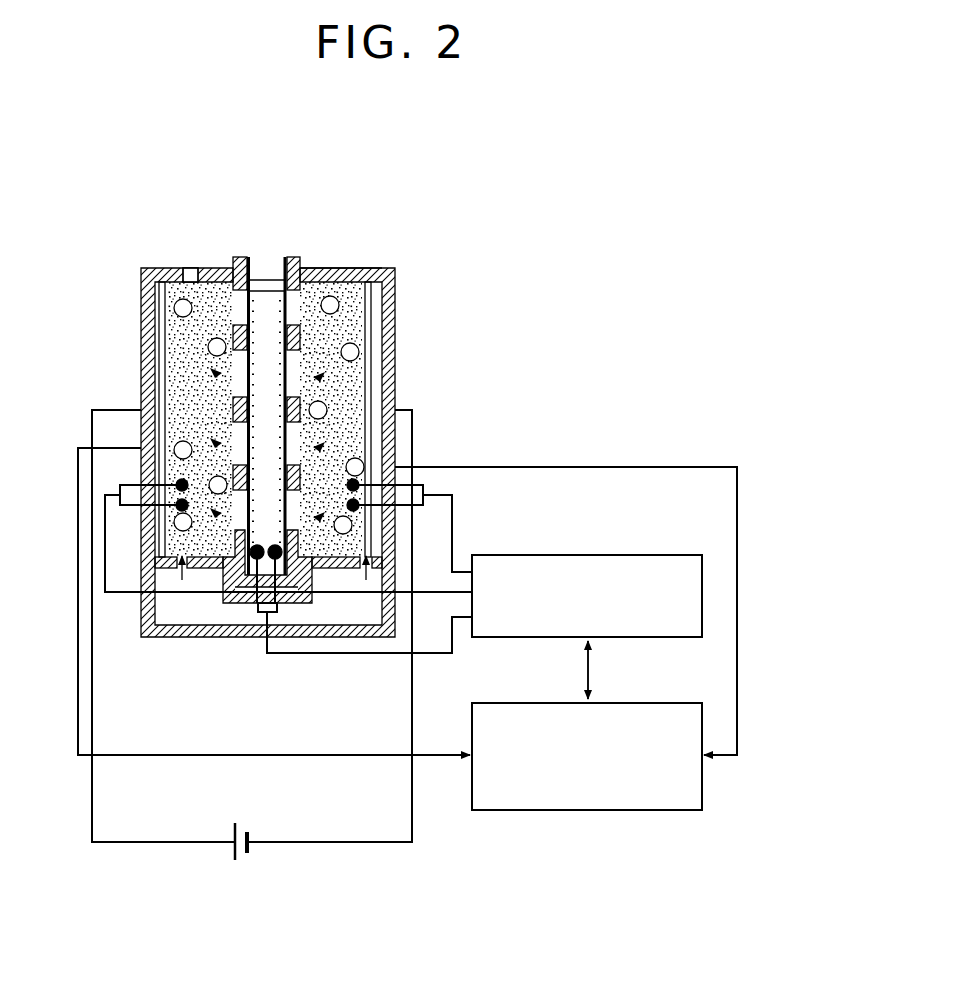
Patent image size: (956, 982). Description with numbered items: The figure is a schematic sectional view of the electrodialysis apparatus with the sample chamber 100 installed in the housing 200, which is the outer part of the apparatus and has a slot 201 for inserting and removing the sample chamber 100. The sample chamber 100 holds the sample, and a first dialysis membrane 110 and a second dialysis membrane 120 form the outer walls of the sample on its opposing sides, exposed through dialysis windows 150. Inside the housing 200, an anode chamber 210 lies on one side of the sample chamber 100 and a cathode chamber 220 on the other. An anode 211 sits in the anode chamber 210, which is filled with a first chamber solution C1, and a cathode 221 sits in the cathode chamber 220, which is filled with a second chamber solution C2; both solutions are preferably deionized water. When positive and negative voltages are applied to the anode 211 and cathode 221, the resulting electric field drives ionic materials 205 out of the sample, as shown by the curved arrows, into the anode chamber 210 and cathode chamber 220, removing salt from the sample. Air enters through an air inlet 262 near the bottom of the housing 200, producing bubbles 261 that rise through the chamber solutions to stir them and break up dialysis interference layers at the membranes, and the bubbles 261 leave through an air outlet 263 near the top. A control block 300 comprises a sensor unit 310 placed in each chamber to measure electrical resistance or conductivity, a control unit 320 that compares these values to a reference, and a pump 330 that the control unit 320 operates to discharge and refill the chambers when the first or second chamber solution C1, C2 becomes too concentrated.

The sample chamber 100 is at (268, 292).
The first dialysis membrane 110 is at (240, 257).
The second dialysis membrane 120 is at (288, 305).
The dialysis window 150 is at (290, 362).
The housing 200 is at (142, 283).
The slot 201 is at (302, 262).
The ionic materials 205 is at (320, 377).
The anode chamber 210 is at (170, 335).
The anode 211 is at (161, 282).
The cathode chamber 220 is at (355, 333).
The cathode 221 is at (374, 282).
The bubbles 261 is at (217, 338).
The air inlet 262 is at (184, 570).
The air outlet 263 is at (190, 268).
The control block 300 is at (795, 432).
The sensor unit 310 is at (430, 492).
The control unit 320 is at (700, 556).
The pump 330 is at (685, 710).
The first chamber solution C1 is at (178, 380).
The second chamber solution C2 is at (355, 370).